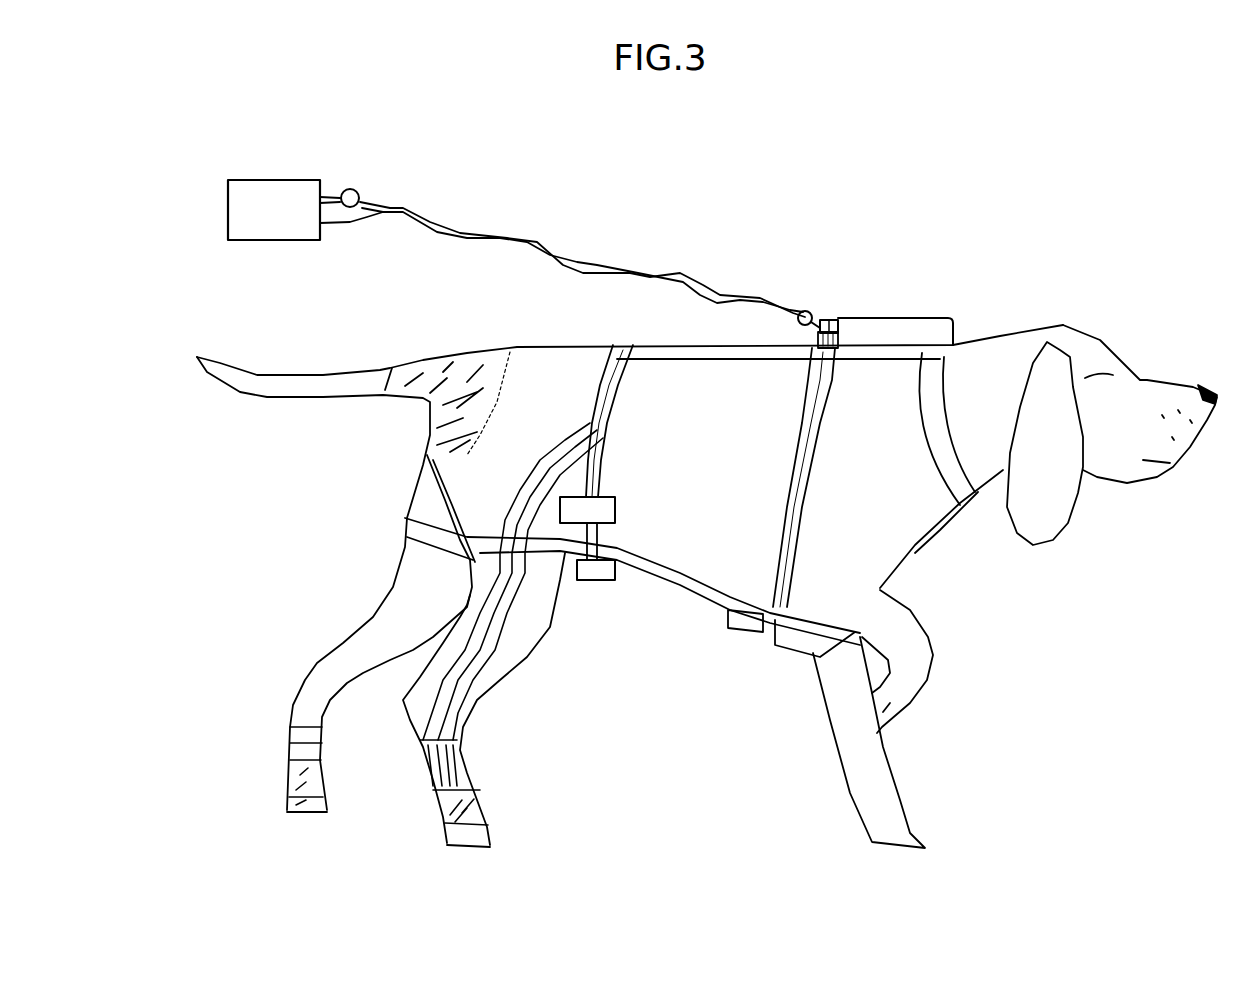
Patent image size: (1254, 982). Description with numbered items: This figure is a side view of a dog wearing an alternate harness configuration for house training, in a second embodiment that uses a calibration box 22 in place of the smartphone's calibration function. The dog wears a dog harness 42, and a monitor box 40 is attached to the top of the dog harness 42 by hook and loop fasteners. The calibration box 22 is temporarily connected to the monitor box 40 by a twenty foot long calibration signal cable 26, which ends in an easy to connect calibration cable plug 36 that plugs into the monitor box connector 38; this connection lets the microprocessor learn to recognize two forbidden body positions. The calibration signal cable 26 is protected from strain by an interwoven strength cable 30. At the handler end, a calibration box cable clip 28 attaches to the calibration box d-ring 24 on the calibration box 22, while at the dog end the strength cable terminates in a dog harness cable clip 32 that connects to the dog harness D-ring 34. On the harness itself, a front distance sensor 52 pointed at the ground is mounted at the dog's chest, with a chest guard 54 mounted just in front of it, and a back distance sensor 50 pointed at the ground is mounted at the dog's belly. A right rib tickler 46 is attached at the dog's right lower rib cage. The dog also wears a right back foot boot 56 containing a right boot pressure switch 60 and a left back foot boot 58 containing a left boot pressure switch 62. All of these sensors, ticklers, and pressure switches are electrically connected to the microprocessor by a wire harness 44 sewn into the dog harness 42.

The calibration box 22 is at (233, 218).
The calibration box d-ring 24 is at (330, 200).
The calibration signal cable 26 is at (344, 228).
The calibration box cable clip 28 is at (356, 190).
The interwoven strength cable 30 is at (463, 225).
The dog harness cable clip 32 is at (803, 310).
The dog harness D-ring 34 is at (818, 338).
The calibration cable plug 36 is at (828, 320).
The monitor box connector 38 is at (848, 318).
The monitor box 40 is at (918, 330).
The dog harness 42 is at (938, 400).
The wire harness 44 is at (597, 408).
The right rib tickler 46 is at (590, 510).
The back distance sensor 50 is at (595, 582).
The front distance sensor 52 is at (740, 618).
The chest guard 54 is at (803, 630).
The right back foot boot 56 is at (450, 797).
The left back foot boot 58 is at (307, 772).
The right boot pressure switch 60 is at (470, 837).
The left boot pressure switch 62 is at (307, 807).